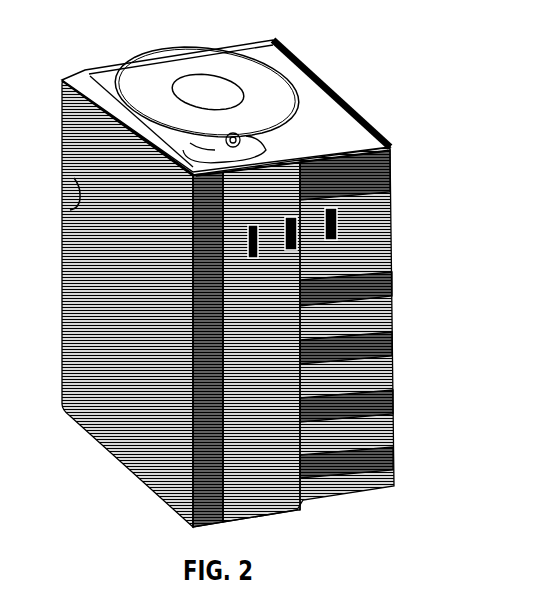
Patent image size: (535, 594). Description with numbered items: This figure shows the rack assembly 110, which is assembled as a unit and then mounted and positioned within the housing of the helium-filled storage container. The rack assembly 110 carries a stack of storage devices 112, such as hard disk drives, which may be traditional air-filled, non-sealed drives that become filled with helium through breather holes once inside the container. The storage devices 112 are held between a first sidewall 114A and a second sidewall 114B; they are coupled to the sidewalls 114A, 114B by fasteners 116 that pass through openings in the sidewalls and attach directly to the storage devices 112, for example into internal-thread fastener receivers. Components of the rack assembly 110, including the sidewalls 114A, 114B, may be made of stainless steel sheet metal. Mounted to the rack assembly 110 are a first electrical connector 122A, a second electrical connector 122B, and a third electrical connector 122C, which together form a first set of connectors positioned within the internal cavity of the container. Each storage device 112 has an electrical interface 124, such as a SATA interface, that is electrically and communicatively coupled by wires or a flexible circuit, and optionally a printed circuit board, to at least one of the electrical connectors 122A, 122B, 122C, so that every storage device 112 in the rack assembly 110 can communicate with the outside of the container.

The rack assembly 110 is at (337, 43).
The storage devices 112 is at (185, 68).
The first sidewall 114A is at (102, 277).
The second sidewall 114B is at (393, 189).
The fasteners 116 is at (70, 210).
The first electrical connector 122A is at (258, 258).
The second electrical connector 122B is at (297, 240).
The third electrical connector 122C is at (337, 216).
The electrical interface 124 is at (261, 342).